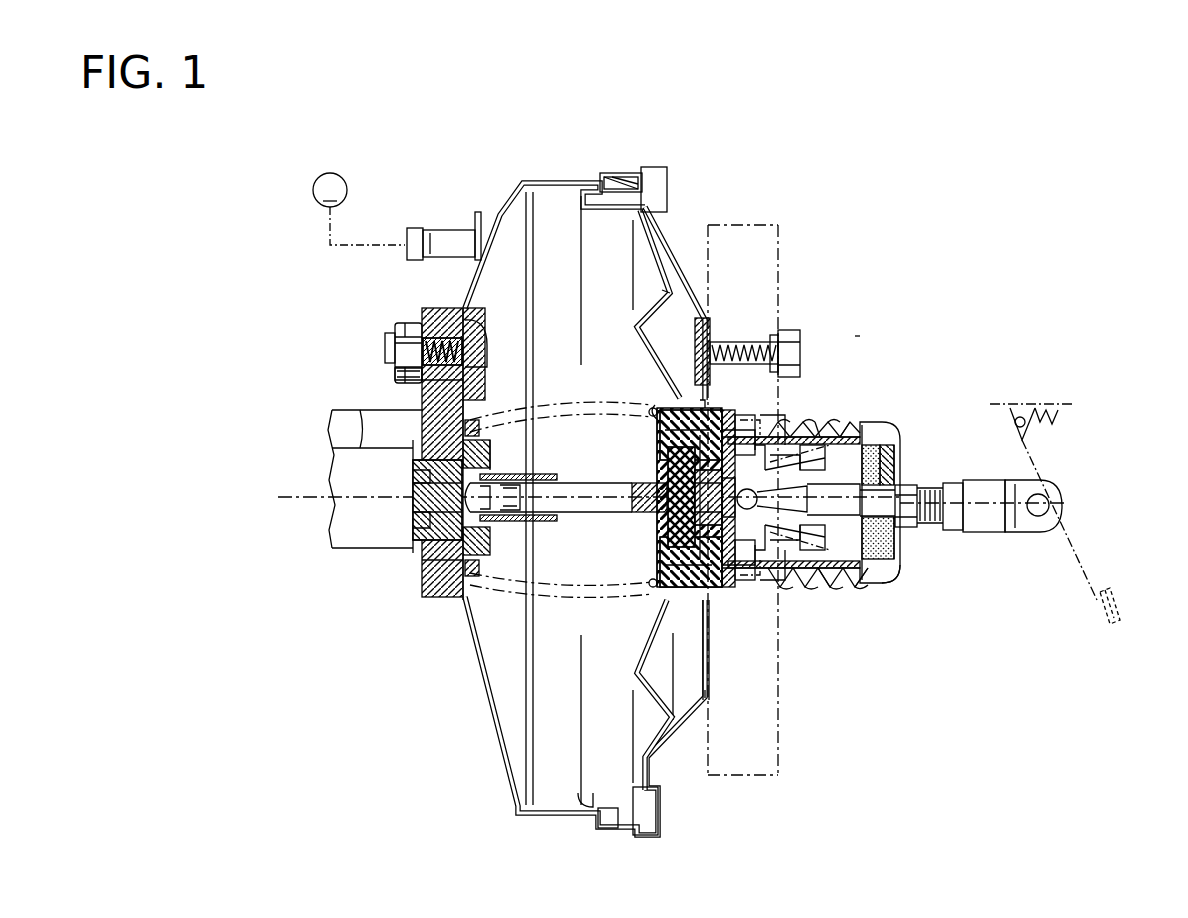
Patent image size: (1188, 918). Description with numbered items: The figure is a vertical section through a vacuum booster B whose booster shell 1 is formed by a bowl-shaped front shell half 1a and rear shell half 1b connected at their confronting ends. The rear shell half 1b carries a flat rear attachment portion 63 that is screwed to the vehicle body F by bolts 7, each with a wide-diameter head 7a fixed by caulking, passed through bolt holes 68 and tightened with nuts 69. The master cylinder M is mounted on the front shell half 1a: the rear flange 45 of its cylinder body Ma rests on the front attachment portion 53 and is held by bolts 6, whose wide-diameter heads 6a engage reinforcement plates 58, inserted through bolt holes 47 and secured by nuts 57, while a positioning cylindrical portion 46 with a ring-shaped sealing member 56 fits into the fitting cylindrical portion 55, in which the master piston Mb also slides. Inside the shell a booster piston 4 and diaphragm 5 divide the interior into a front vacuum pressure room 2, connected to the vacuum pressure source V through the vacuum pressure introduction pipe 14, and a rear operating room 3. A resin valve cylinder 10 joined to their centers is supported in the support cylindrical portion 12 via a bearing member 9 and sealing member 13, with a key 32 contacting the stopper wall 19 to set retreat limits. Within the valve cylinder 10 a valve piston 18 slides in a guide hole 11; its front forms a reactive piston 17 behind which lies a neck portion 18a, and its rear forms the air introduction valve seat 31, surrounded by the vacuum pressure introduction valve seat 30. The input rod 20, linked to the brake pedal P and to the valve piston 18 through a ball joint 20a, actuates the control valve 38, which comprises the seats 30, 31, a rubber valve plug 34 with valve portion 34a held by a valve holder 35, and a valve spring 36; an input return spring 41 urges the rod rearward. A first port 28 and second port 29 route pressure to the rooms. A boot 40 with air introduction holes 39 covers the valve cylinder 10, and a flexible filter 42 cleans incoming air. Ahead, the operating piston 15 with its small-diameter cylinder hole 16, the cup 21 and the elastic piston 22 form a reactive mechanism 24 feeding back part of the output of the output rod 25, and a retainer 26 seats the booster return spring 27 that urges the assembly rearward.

The booster shell 1 is at (712, 142).
The front shell half 1a is at (628, 180).
The rear shell half 1b is at (672, 235).
The front vacuum pressure room 2 is at (560, 312).
The rear operating room 3 is at (670, 345).
The booster piston 4 is at (660, 272).
The diaphragm 5 is at (670, 290).
The bolt 6 is at (386, 345).
The wide-diameter head 6a is at (480, 328).
The bolt 7 is at (745, 341).
The wide-diameter head 7a is at (702, 318).
The bearing member 9 is at (728, 412).
The valve cylinder 10 is at (858, 424).
The guide hole 11 is at (758, 590).
The support cylindrical portion 12 is at (748, 416).
The sealing member 13 is at (756, 412).
The vacuum pressure introduction pipe 14 is at (447, 238).
The operating piston 15 is at (663, 588).
The small-diameter cylinder hole 16 is at (660, 471).
The reactive piston 17 is at (660, 522).
The valve piston 18 is at (767, 580).
The neck portion 18a is at (703, 600).
The stopper wall 19 is at (700, 382).
The input rod 20 is at (902, 470).
The ball joint 20a is at (822, 580).
The cup 21 is at (690, 557).
The elastic piston 22 is at (628, 502).
The reactive mechanism 24 is at (665, 557).
The output rod 25 is at (573, 505).
The retainer 26 is at (665, 451).
The booster return spring 27 is at (575, 408).
The first port 28 is at (728, 588).
The second port 29 is at (770, 416).
The vacuum pressure introduction valve seat 30 is at (788, 584).
The air introduction valve seat 31 is at (822, 497).
The key 32 is at (700, 398).
The valve plug 34 is at (830, 432).
The valve portion 34a is at (821, 422).
The valve holder 35 is at (845, 432).
The valve spring 36 is at (828, 452).
The control valve 38 is at (785, 575).
The air introduction holes 39 is at (882, 455).
The boot 40 is at (848, 595).
The input return spring 41 is at (828, 527).
The filter 42 is at (895, 583).
The rear flange 45 is at (425, 420).
The positioning cylindrical portion 46 is at (486, 560).
The bolt holes 47 is at (446, 340).
The front attachment portion 53 is at (440, 598).
The fitting cylindrical portion 55 is at (472, 420).
The sealing member 56 is at (492, 455).
The nuts 57 is at (405, 322).
The reinforcement plate 58 is at (482, 390).
The rear attachment portion 63 is at (708, 655).
The bolt holes 68 is at (764, 335).
The nuts 69 is at (795, 332).
The vacuum booster B is at (858, 335).
The vehicle body F is at (782, 288).
The master cylinder M is at (355, 405).
The cylinder body Ma is at (398, 548).
The master piston Mb is at (413, 503).
The brake pedal P is at (1112, 606).
The vacuum pressure source V is at (359, 209).